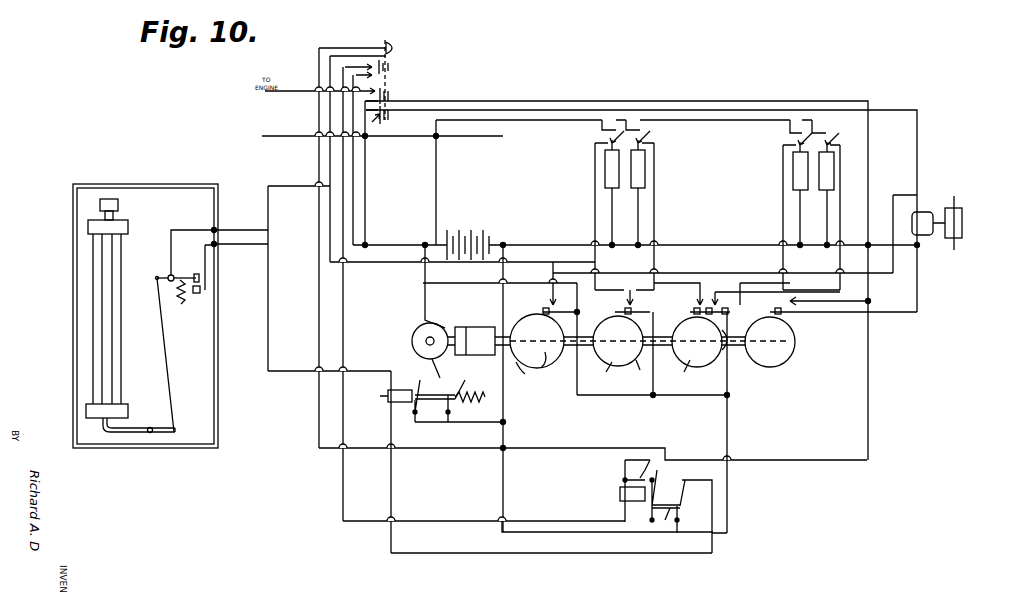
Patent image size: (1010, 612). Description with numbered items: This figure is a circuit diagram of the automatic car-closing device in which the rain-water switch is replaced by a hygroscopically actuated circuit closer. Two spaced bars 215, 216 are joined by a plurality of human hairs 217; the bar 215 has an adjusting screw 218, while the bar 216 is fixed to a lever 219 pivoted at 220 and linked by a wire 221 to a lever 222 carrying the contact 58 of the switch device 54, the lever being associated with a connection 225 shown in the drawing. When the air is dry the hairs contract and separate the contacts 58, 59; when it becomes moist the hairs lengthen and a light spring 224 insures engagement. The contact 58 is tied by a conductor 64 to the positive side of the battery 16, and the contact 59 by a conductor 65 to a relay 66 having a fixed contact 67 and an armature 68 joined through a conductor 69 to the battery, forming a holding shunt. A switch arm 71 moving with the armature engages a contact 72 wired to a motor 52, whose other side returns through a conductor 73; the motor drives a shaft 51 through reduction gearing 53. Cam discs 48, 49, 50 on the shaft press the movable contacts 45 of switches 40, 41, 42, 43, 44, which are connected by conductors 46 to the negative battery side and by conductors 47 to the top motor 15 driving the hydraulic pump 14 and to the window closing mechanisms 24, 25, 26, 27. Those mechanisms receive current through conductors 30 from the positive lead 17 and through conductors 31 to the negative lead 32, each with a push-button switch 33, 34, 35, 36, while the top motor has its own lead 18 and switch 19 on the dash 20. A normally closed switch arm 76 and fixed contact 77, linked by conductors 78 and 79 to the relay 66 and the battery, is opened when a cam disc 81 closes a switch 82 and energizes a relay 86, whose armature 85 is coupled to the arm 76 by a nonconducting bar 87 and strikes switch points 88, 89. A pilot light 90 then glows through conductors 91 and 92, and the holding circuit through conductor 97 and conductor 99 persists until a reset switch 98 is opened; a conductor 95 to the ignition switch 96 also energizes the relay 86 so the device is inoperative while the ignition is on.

The hydraulic pump 14 is at (962, 220).
The motor 15 is at (925, 235).
The battery 16 is at (466, 230).
The positive lead 17 is at (700, 245).
The negative lead 18 is at (715, 110).
The switch 19 is at (374, 126).
The instrument board or dash 20 is at (395, 80).
The right front window closing mechanism 24 is at (605, 166).
The left front window closing mechanism 25 is at (645, 166).
The right back window closing mechanism 26 is at (793, 167).
The left back window closing mechanism 27 is at (834, 165).
The conductors 30 is at (638, 208).
The conductors 31 is at (610, 140).
The negative lead 32 is at (743, 120).
The switch 33 is at (610, 126).
The switch 34 is at (636, 127).
The switch 35 is at (796, 128).
The switch 36 is at (822, 129).
The switch 40 is at (541, 311).
The switch 41 is at (624, 312).
The switch 42 is at (692, 310).
The switch 43 is at (704, 313).
The switch 44 is at (730, 312).
The movable contact 45 is at (616, 341).
The conductors 46 is at (438, 283).
The conductors 47 is at (654, 260).
The cam disc 48 is at (545, 368).
The cam disc 49 is at (608, 375).
The cam disc 50 is at (679, 372).
The shaft 51 is at (584, 350).
The motor 52 is at (412, 333).
The reduction gearing 53 is at (472, 328).
The switch device 54 is at (188, 182).
The contact 58 is at (200, 278).
The contact 59 is at (201, 290).
The conductor 64 is at (330, 206).
The conductor 65 is at (290, 371).
The relay switch 66 is at (398, 400).
The fixed contact 67 is at (406, 388).
The armature 68 is at (428, 422).
The conductor 69 is at (484, 422).
The switch arm 71 is at (450, 413).
The contact 72 is at (455, 386).
The conductor 73 is at (425, 307).
The switch arm 76 is at (700, 486).
The fixed contact 77 is at (692, 479).
The conductor 78 is at (588, 553).
The conductor 79 is at (727, 425).
The cam disc 81 is at (778, 360).
The switch 82 is at (795, 303).
The armature 85 is at (664, 496).
The relay 86 is at (625, 498).
The nonconducting bar 87 is at (672, 512).
The fixed switch point 88 is at (680, 476).
The fixed switch point 89 is at (648, 467).
The pilot light 90 is at (396, 48).
The conductor 91 is at (319, 284).
The conductor 92 is at (319, 71).
The conductor 95 is at (546, 98).
The ignition switch 96 is at (392, 96).
The conductor 97 is at (420, 521).
The reset switch 98 is at (392, 67).
The conductor 99 is at (355, 184).
The bar 215 is at (88, 227).
The bar 216 is at (88, 408).
The human hairs 217 is at (93, 322).
The adjusting screw 218 is at (118, 214).
The lever 219 is at (127, 433).
The pivot 220 is at (152, 434).
The wire or link 221 is at (167, 380).
The lever 222 is at (165, 275).
The light spring 224 is at (184, 302).
The conductor 225 is at (173, 274).